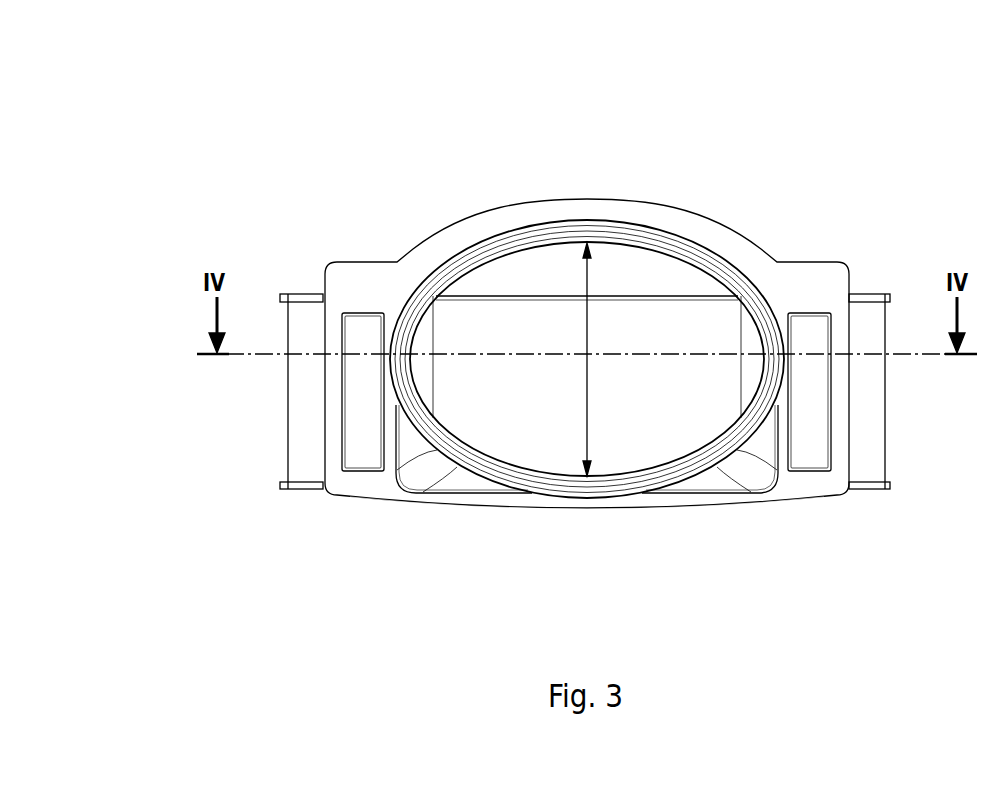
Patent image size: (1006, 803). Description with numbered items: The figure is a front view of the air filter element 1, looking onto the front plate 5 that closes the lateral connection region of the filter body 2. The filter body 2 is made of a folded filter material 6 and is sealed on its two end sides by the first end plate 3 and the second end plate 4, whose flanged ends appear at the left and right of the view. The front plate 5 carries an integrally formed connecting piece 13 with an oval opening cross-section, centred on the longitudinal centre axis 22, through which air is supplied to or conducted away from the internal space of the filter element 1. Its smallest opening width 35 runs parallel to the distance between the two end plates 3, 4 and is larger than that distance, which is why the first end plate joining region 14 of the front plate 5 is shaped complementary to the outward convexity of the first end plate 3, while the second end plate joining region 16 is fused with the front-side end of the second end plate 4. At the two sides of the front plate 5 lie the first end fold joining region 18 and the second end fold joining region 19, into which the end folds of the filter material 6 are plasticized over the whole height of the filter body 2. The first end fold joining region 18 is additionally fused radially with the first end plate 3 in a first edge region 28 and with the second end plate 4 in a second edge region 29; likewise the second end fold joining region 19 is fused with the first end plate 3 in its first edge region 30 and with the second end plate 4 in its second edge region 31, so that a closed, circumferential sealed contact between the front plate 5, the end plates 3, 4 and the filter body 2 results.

The air filter element 1 is at (267, 204).
The filter body 2 is at (276, 421).
The first end plate 3 is at (886, 287).
The second end plate 4 is at (906, 483).
The front plate 5 is at (768, 236).
The folded filter material 6 is at (302, 453).
The connecting piece 13 is at (683, 247).
The first end plate joining region 14 is at (572, 208).
The second end plate joining region 16 is at (527, 502).
The first end fold joining region 18 is at (355, 395).
The second end fold joining region 19 is at (818, 395).
The longitudinal centre axis 22 is at (443, 224).
The first edge region 28 is at (357, 315).
The second edge region 29 is at (365, 480).
The first edge region 30 is at (812, 315).
The second edge region 31 is at (815, 478).
The opening width 35 is at (590, 392).